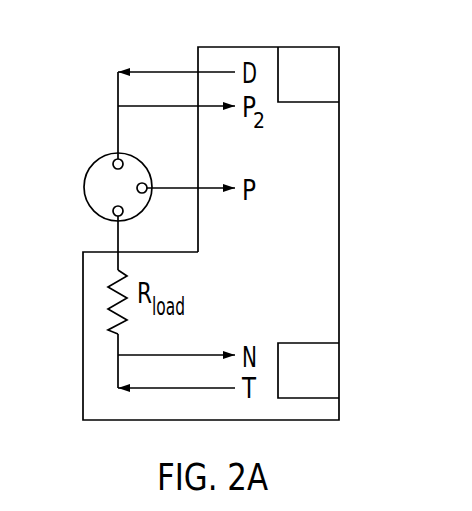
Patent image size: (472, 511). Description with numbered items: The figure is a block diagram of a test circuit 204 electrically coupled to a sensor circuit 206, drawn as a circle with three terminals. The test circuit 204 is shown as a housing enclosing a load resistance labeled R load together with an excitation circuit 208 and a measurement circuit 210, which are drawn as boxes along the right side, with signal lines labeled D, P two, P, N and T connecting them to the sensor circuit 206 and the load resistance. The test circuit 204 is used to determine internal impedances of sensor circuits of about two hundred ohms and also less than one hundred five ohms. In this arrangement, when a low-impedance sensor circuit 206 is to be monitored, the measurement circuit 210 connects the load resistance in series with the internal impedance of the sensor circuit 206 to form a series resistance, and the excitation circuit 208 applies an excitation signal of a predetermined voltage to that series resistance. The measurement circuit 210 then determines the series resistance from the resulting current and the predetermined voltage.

The test circuit 204 is at (241, 46).
The sensor circuit 206 is at (84, 186).
The excitation circuit 208 is at (324, 77).
The measurement circuit 210 is at (324, 373).